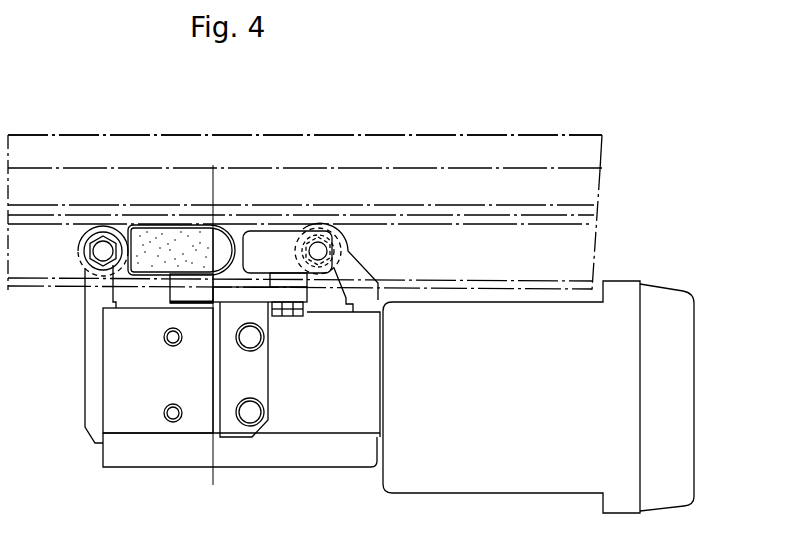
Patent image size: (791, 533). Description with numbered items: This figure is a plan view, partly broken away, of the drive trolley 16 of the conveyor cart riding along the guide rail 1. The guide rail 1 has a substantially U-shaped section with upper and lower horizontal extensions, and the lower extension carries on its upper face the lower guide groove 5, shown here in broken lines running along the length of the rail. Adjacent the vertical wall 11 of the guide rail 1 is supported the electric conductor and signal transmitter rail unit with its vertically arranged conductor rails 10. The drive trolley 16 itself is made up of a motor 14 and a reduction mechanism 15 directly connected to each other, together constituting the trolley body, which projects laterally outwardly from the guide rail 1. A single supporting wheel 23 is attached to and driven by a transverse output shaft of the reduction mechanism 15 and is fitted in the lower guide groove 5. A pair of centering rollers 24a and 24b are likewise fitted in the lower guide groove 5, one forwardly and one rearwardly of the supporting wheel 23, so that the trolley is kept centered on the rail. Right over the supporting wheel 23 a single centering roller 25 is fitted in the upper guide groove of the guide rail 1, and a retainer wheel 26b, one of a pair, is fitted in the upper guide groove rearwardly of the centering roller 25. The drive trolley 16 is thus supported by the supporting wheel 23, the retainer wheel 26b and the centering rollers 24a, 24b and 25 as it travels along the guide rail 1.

The guide rail 1 is at (542, 132).
The lower guide groove 5 is at (565, 258).
The conductor rails 10 is at (561, 202).
The vertical wall 11 is at (473, 140).
The motor 14 is at (527, 438).
The reduction mechanism 15 is at (125, 384).
The drive trolley 16 is at (166, 442).
The supporting wheel 23 is at (167, 237).
The centering roller 24a is at (100, 227).
The centering roller 24b is at (347, 242).
The centering roller 25 is at (228, 232).
The retainer wheel 26b is at (282, 237).